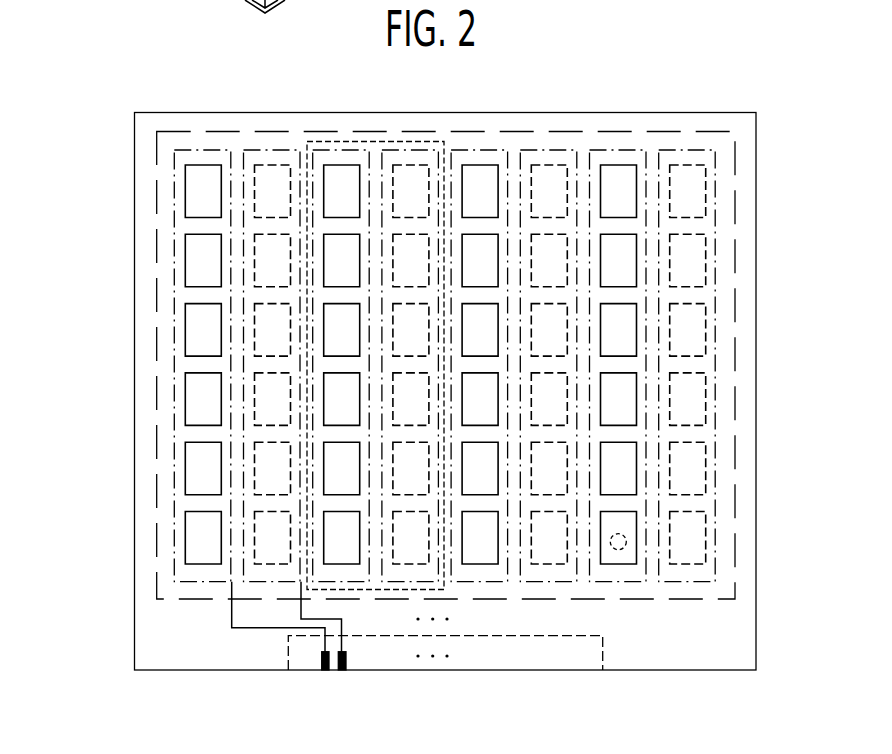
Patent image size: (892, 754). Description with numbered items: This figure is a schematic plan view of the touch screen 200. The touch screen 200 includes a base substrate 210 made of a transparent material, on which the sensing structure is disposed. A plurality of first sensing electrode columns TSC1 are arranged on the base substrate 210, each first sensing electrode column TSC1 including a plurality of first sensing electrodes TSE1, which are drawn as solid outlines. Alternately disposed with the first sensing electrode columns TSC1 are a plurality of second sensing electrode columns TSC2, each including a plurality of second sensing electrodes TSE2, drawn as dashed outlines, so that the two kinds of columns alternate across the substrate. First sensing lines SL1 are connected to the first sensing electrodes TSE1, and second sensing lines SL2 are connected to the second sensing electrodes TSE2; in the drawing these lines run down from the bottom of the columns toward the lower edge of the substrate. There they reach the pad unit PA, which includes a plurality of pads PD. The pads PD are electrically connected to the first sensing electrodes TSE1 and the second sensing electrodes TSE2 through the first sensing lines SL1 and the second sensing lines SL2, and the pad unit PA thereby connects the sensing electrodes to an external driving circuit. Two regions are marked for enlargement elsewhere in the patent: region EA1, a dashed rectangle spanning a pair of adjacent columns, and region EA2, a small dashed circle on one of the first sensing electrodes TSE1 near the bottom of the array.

The touch screen 200 is at (742, 105).
The base substrate 210 is at (748, 153).
The first sensing electrode column TSC1 is at (203, 147).
The second sensing electrode column TSC2 is at (272, 147).
The first sensing electrode TSE1 is at (192, 191).
The second sensing electrode TSE2 is at (543, 177).
The region EA1 is at (375, 142).
The region EA2 is at (616, 552).
The first sensing line SL1 is at (245, 630).
The second sensing line SL2 is at (343, 628).
The pad PD is at (315, 670).
The pad unit PA is at (506, 663).